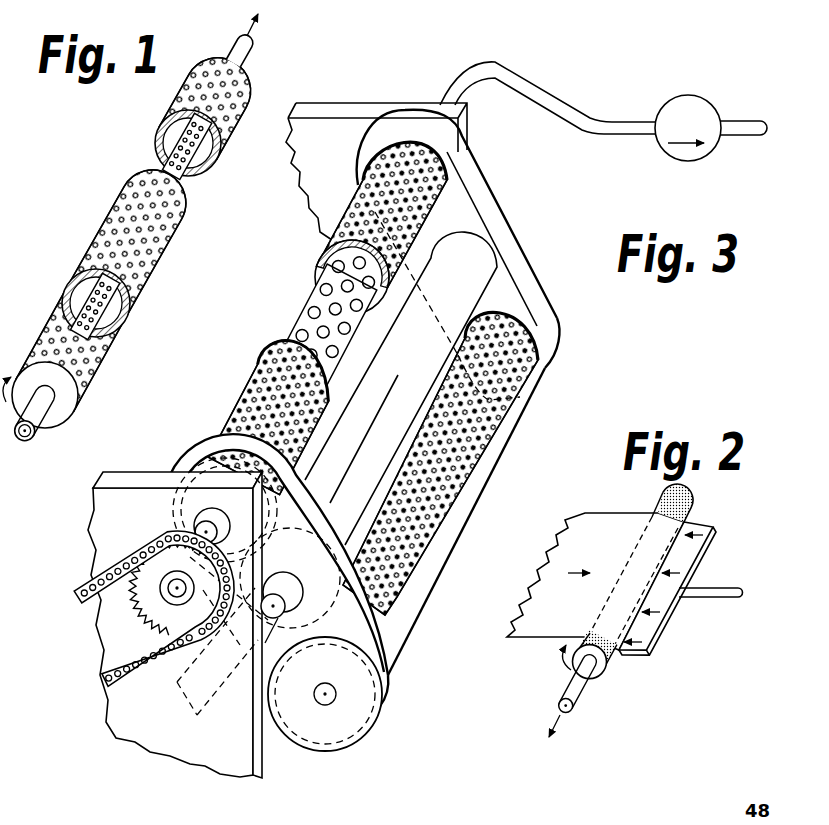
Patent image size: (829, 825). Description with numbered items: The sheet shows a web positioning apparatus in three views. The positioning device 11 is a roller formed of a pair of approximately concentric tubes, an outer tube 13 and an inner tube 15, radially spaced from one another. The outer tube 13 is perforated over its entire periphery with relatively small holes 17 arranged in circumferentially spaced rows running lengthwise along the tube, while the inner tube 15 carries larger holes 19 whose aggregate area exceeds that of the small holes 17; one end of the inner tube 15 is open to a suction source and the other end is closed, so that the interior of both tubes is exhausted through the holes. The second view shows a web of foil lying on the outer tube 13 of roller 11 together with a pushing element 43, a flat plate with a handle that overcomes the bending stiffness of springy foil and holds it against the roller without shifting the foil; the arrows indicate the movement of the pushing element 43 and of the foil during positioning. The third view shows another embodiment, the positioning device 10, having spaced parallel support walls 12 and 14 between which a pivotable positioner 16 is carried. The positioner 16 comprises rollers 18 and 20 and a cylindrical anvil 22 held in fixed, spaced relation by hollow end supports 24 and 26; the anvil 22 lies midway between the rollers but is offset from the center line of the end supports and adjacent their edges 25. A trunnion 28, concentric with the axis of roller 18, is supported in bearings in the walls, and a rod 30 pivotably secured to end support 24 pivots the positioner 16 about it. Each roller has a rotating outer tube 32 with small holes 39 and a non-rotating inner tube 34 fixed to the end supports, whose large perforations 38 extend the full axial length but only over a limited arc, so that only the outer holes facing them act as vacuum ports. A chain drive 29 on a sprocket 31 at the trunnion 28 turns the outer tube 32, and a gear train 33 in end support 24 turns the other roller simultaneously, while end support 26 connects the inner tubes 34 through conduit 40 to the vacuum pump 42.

In FIG. 3, the positioning device 10 is at (153, 639).
In FIG. 1, the positioning device 11 is at (148, 227).
In FIG. 2, the positioning device 11 is at (696, 503).
In FIG. 3, the support wall 12 is at (117, 528).
In FIG. 1, the outer tube 13 is at (172, 97).
In FIG. 3, the support wall 14 is at (303, 140).
In FIG. 1, the inner tube 15 is at (178, 137).
In FIG. 3, the pivotable positioner 16 is at (498, 462).
In FIG. 1, the holes 17 is at (115, 202).
In FIG. 3, the roller 18 is at (250, 380).
In FIG. 1, the holes 19 is at (116, 320).
In FIG. 3, the roller 20 is at (393, 378).
In FIG. 3, the cylindrical anvil 22 is at (358, 414).
In FIG. 3, the hollow end support 24 is at (394, 676).
In FIG. 3, the edges 25 is at (397, 412).
In FIG. 3, the hollow end support 26 is at (562, 350).
In FIG. 3, the trunnion 28 is at (205, 525).
In FIG. 3, the chain drive 29 is at (91, 606).
In FIG. 3, the rod 30 is at (282, 619).
In FIG. 3, the sprocket 31 is at (170, 612).
In FIG. 3, the outer tube 32 is at (335, 226).
In FIG. 3, the gear train 33 is at (357, 717).
In FIG. 3, the inner tube 34 is at (330, 329).
In FIG. 3, the perforations 38 is at (355, 306).
In FIG. 3, the holes 39 is at (372, 275).
In FIG. 3, the conduit 40 is at (558, 98).
In FIG. 3, the vacuum pump 42 is at (700, 153).
In FIG. 2, the pushing element 43 is at (660, 637).